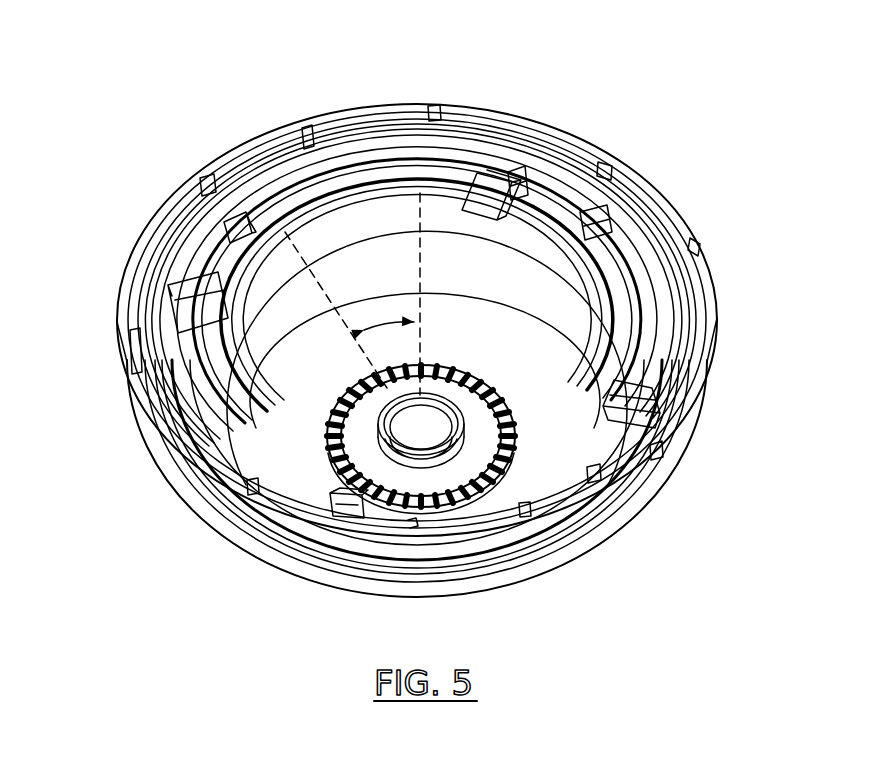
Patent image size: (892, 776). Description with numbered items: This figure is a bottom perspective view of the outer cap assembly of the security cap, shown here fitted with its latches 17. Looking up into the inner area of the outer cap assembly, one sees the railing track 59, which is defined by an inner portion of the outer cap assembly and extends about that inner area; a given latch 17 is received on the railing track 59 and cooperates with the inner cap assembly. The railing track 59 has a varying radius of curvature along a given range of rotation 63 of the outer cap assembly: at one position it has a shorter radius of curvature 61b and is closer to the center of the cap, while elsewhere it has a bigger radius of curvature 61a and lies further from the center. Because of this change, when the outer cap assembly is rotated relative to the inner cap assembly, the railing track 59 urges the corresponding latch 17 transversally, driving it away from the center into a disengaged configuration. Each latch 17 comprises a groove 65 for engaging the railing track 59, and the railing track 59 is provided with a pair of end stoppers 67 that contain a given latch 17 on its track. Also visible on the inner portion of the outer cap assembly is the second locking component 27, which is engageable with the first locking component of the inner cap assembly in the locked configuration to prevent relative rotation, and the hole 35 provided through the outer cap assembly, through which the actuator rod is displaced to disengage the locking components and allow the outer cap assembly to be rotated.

The latch 17 is at (484, 185).
The second locking component 27 is at (517, 461).
The hole 35 is at (426, 437).
The railing track 59 is at (638, 250).
The bigger radius of curvature 61a is at (324, 305).
The shorter radius of curvature 61b is at (424, 272).
The range of rotation 63 is at (383, 320).
The groove 65 is at (172, 327).
The end stoppers 67 is at (244, 216).